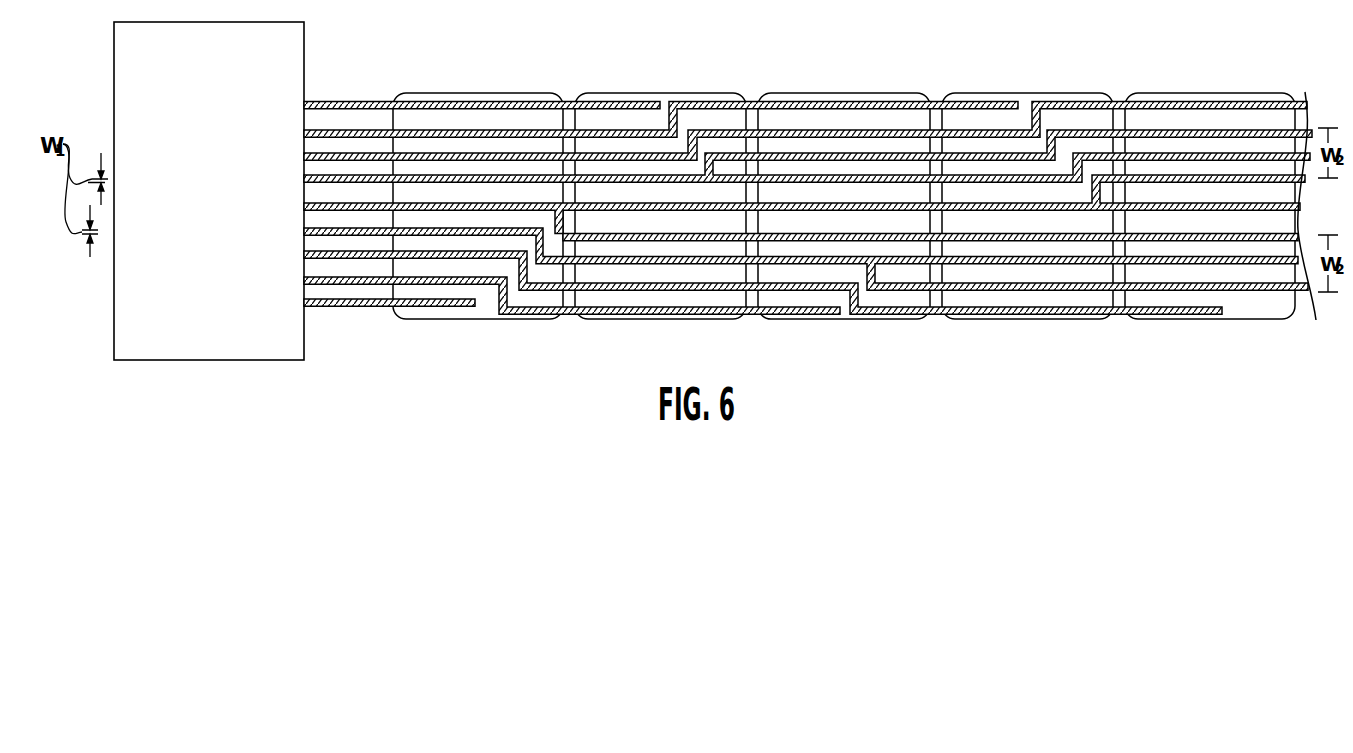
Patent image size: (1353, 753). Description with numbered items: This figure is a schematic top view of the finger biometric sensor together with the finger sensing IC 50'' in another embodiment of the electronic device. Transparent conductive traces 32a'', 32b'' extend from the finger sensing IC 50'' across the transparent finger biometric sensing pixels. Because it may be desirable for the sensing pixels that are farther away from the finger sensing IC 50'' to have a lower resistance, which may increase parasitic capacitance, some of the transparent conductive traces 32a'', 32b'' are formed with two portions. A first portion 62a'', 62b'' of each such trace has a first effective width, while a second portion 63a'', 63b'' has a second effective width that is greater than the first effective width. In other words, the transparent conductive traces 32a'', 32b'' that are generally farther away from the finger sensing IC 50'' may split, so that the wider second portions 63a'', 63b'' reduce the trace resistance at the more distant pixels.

The finger sensing IC 50'' is at (209, 224).
The first portion 62a'' is at (808, 99).
The first portion 62b'' is at (806, 304).
The transparent conductive trace 32a'' is at (805, 88).
The transparent conductive trace 32b'' is at (763, 325).
The second portion 63a'' is at (844, 168).
The second portion 63b'' is at (1290, 245).